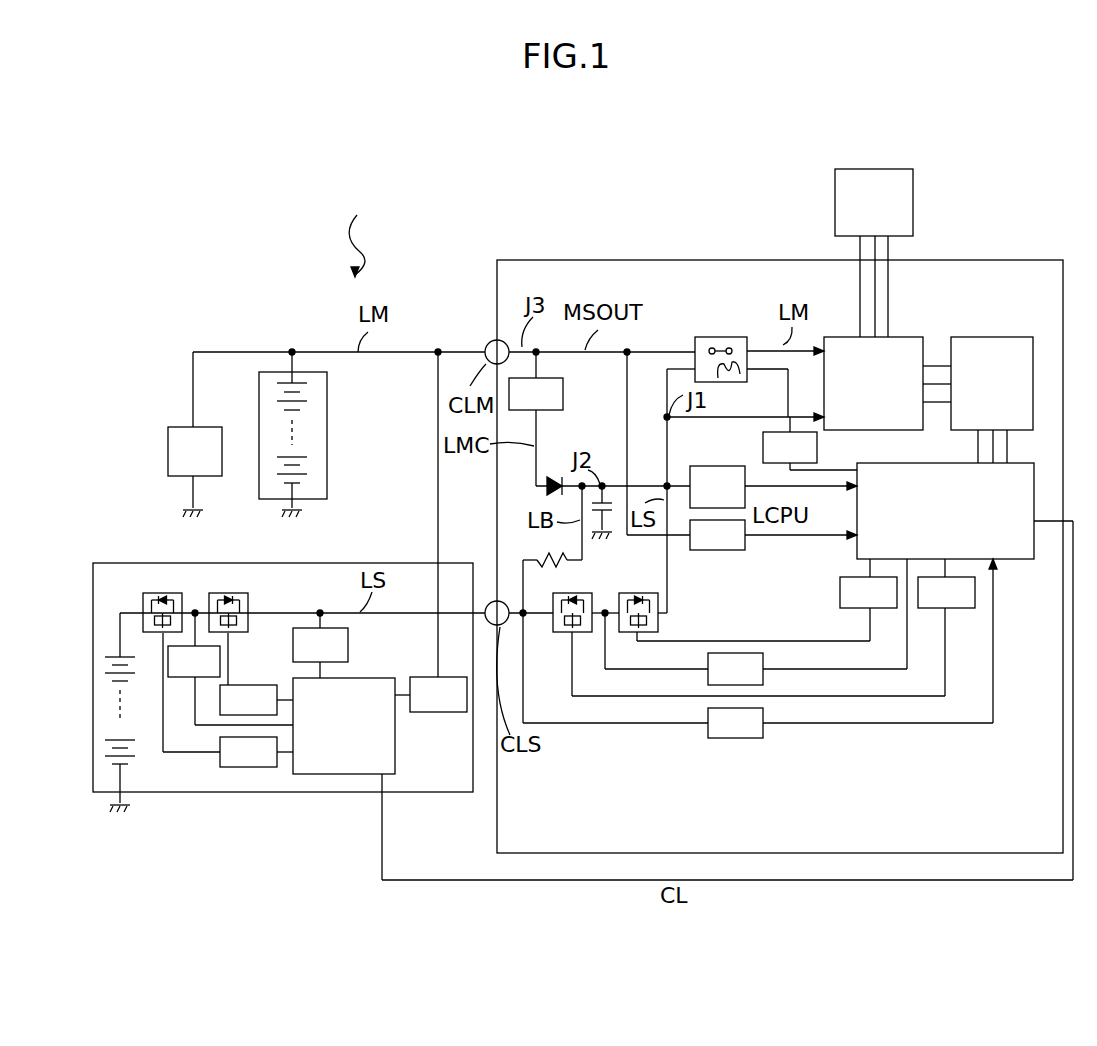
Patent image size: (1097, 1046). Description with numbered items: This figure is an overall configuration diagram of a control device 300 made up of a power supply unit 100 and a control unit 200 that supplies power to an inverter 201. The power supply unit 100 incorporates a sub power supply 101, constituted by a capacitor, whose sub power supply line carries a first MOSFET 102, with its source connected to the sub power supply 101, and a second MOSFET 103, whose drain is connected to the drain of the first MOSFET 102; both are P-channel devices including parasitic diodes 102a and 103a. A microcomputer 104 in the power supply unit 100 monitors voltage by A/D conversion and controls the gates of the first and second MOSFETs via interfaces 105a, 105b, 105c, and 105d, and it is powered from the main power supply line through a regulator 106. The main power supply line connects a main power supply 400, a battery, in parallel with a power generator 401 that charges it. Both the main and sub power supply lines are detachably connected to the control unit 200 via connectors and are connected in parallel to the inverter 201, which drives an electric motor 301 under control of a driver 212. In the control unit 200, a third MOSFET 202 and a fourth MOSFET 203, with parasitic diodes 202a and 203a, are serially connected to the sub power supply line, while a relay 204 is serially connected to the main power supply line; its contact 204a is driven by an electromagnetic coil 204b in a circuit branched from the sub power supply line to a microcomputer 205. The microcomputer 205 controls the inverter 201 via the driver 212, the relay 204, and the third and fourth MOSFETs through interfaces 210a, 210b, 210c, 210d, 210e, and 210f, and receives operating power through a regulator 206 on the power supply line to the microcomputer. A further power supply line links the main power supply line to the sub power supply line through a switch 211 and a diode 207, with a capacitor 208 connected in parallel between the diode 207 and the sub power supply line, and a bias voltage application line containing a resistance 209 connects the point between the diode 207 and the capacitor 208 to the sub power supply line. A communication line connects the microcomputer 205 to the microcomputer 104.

The power supply unit 100 is at (345, 793).
The sub power supply 101 is at (128, 770).
The first MOSFET 102 is at (141, 596).
The parasitic diode 102a is at (178, 594).
The second MOSFET 103 is at (248, 606).
The parasitic diode 103a is at (246, 594).
The microcomputer 104 is at (395, 760).
The interface 105a is at (255, 666).
The interface 105b is at (348, 648).
The interface 105c is at (250, 768).
The interface 105d is at (222, 708).
The regulator 106 is at (438, 713).
The control unit 200 is at (565, 260).
The inverter 201 is at (907, 337).
The third MOSFET 202 is at (560, 633).
The parasitic diode 202a is at (597, 594).
The fourth MOSFET 203 is at (660, 622).
The parasitic diode 203a is at (652, 597).
The relay 204 is at (731, 337).
The contact 204a is at (709, 348).
The electromagnetic coil 204b is at (731, 377).
The microcomputer 205 is at (1013, 562).
The regulator 206 is at (730, 466).
The diode 207 is at (554, 475).
The capacitor 208 is at (607, 484).
The resistance 209 is at (532, 553).
The interface 210a is at (712, 550).
The interface 210b is at (763, 660).
The interface 210c is at (765, 738).
The interface 210d is at (965, 608).
The interface 210e is at (840, 596).
The interface 210f is at (817, 448).
The switch 211 is at (563, 393).
The driver 212 is at (993, 337).
The control device 300 is at (346, 225).
The electric motor 301 is at (913, 203).
The main power supply 400 is at (327, 437).
The power generator 401 is at (207, 425).